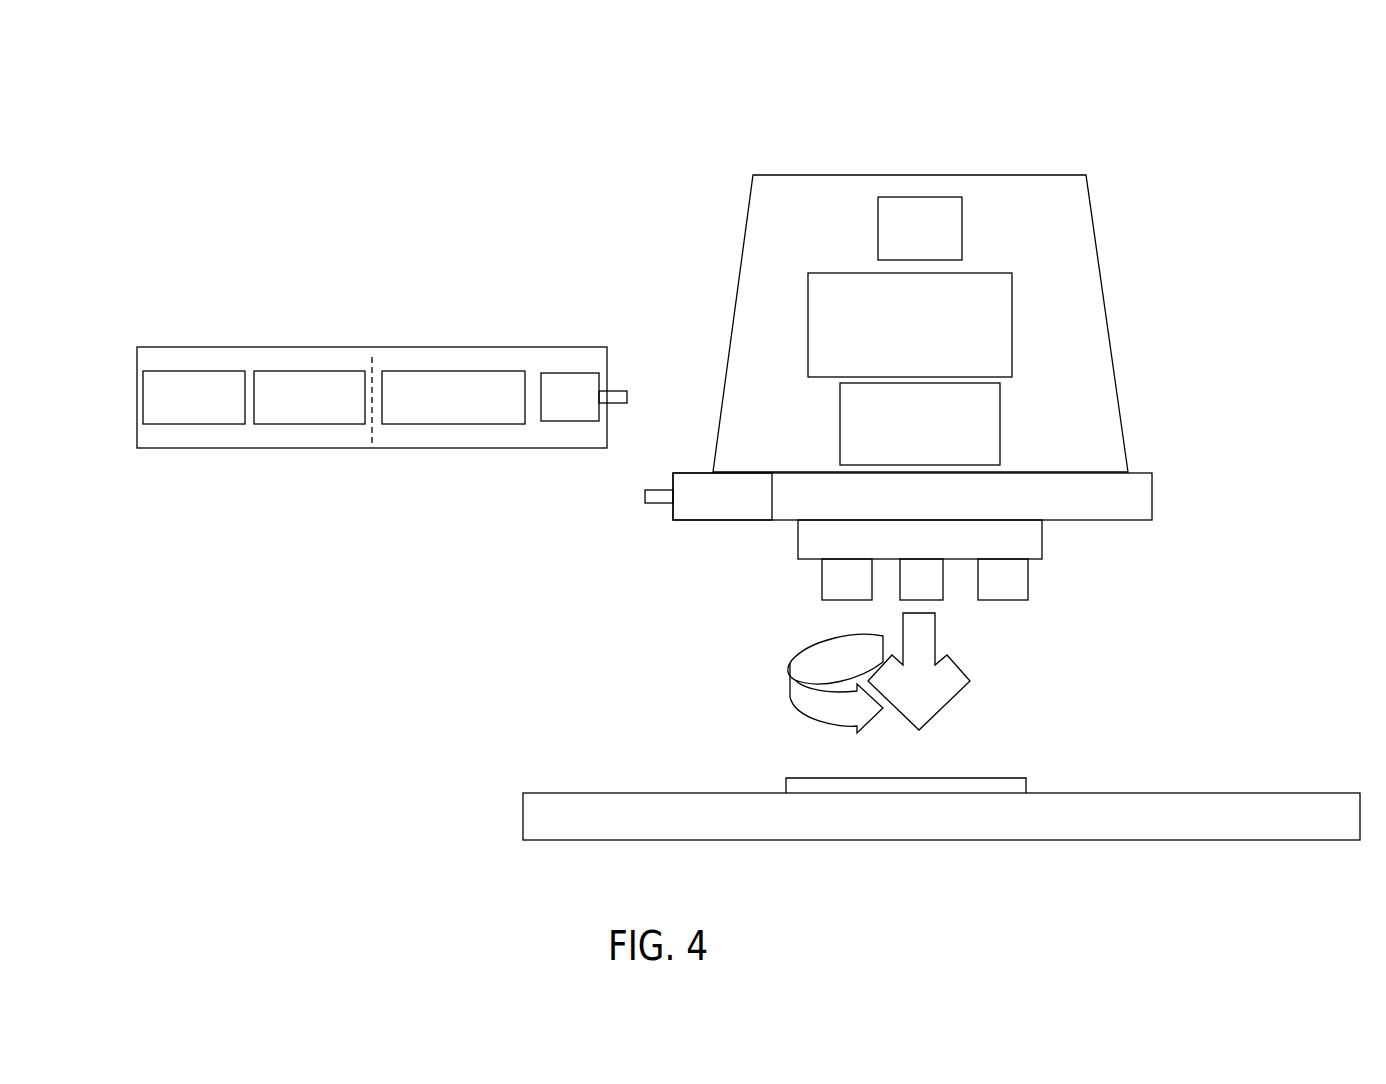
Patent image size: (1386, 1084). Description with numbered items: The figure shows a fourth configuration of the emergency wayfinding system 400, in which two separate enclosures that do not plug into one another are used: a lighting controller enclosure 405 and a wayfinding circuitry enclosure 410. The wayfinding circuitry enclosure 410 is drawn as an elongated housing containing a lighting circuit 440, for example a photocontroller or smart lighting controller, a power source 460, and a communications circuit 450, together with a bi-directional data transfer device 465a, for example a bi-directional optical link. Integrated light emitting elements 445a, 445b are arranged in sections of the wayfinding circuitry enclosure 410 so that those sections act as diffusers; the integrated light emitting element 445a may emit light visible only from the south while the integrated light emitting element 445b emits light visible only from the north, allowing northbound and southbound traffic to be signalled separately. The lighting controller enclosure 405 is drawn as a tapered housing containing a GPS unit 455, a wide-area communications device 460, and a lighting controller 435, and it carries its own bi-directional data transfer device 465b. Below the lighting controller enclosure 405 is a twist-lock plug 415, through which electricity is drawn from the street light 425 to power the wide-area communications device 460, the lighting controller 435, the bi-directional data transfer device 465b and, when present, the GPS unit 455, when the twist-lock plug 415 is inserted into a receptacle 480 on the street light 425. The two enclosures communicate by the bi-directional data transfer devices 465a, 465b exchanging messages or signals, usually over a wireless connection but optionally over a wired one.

The emergency wayfinding system 400 is at (726, 438).
The lighting controller enclosure 405 is at (942, 399).
The wayfinding circuitry enclosure 410 is at (382, 402).
The twist-lock plug 415 is at (1028, 575).
The street light 425 is at (1070, 793).
The lighting controller 435 is at (920, 424).
The lighting circuit 440 is at (194, 397).
The integrated light emitting element 445a is at (254, 456).
The integrated light emitting element 445b is at (490, 411).
The communications circuit 450 is at (453, 397).
The GPS unit 455 is at (920, 228).
The wide-area communications device 460 is at (309, 397).
The bi-directional data transfer device 465a is at (569, 397).
The bi-directional data transfer device 465b is at (723, 495).
The receptacle 480 is at (1010, 777).